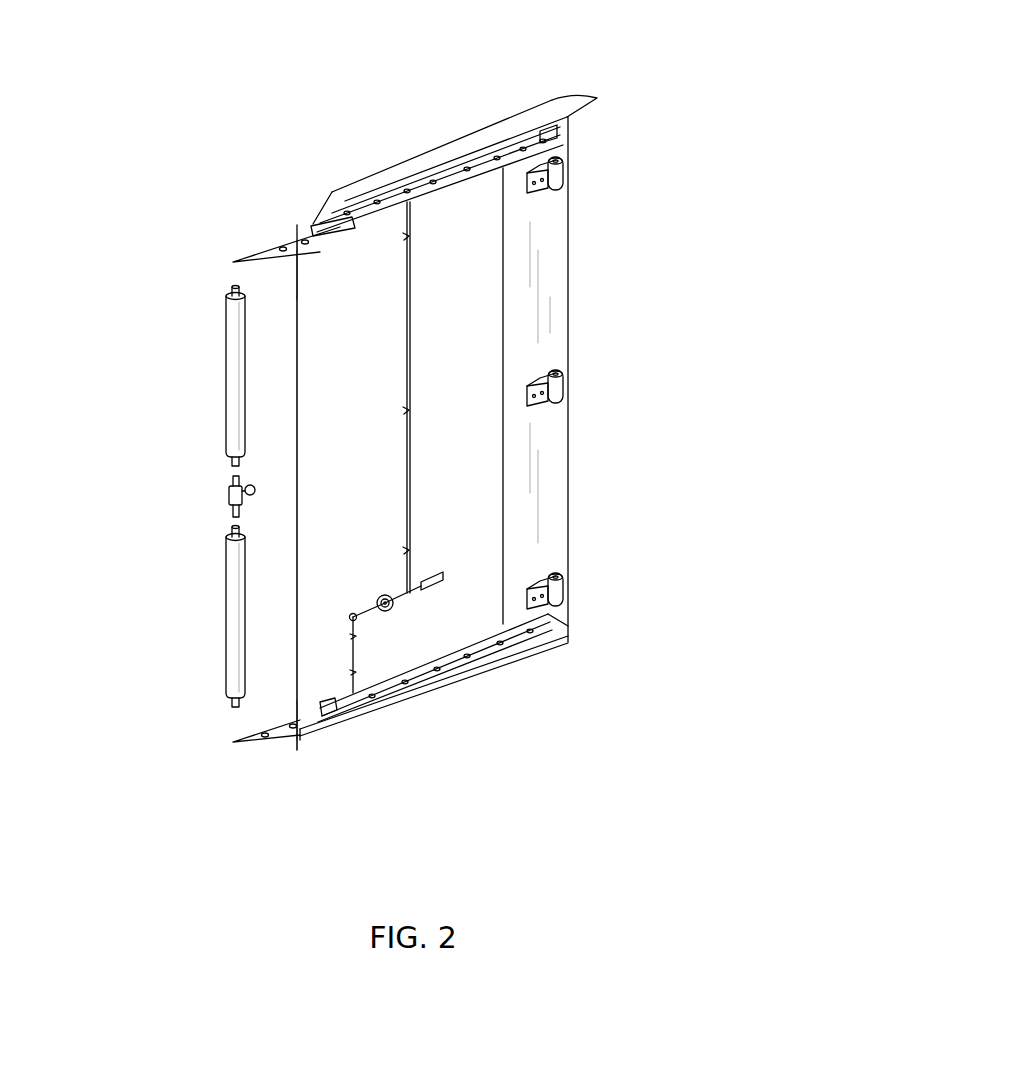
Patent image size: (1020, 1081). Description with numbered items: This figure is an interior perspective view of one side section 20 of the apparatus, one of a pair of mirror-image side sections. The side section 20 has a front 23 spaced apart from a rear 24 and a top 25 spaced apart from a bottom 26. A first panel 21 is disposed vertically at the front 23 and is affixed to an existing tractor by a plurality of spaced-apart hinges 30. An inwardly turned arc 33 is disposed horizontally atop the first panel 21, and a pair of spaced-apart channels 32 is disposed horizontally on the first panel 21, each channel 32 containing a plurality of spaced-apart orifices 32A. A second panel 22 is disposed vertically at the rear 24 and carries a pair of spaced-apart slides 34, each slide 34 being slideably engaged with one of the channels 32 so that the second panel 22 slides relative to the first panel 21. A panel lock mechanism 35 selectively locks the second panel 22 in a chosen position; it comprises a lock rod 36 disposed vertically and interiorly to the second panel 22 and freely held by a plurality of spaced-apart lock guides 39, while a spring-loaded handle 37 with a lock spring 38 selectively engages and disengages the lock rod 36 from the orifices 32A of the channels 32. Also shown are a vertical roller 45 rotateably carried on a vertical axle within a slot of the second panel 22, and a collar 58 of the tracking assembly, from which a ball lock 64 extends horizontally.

The side section 20 is at (240, 147).
The first panel 21 is at (558, 253).
The second panel 22 is at (300, 272).
The front 23 is at (600, 352).
The rear 24 is at (244, 766).
The top 25 is at (436, 128).
The bottom 26 is at (555, 656).
The hinge 30 is at (563, 167).
The channel 32 is at (560, 137).
The orifice 32A is at (497, 152).
The inwardly turned arc 33 is at (580, 97).
The slide 34 is at (235, 262).
The panel lock mechanism 35 is at (380, 245).
The lock rod 36 is at (608, 363).
The spring-loaded handle 37 is at (423, 588).
The lock spring 38 is at (387, 612).
The lock guide 39 is at (407, 235).
The vertical roller 45 is at (227, 357).
The collar 58 is at (228, 500).
The ball lock 64 is at (252, 486).